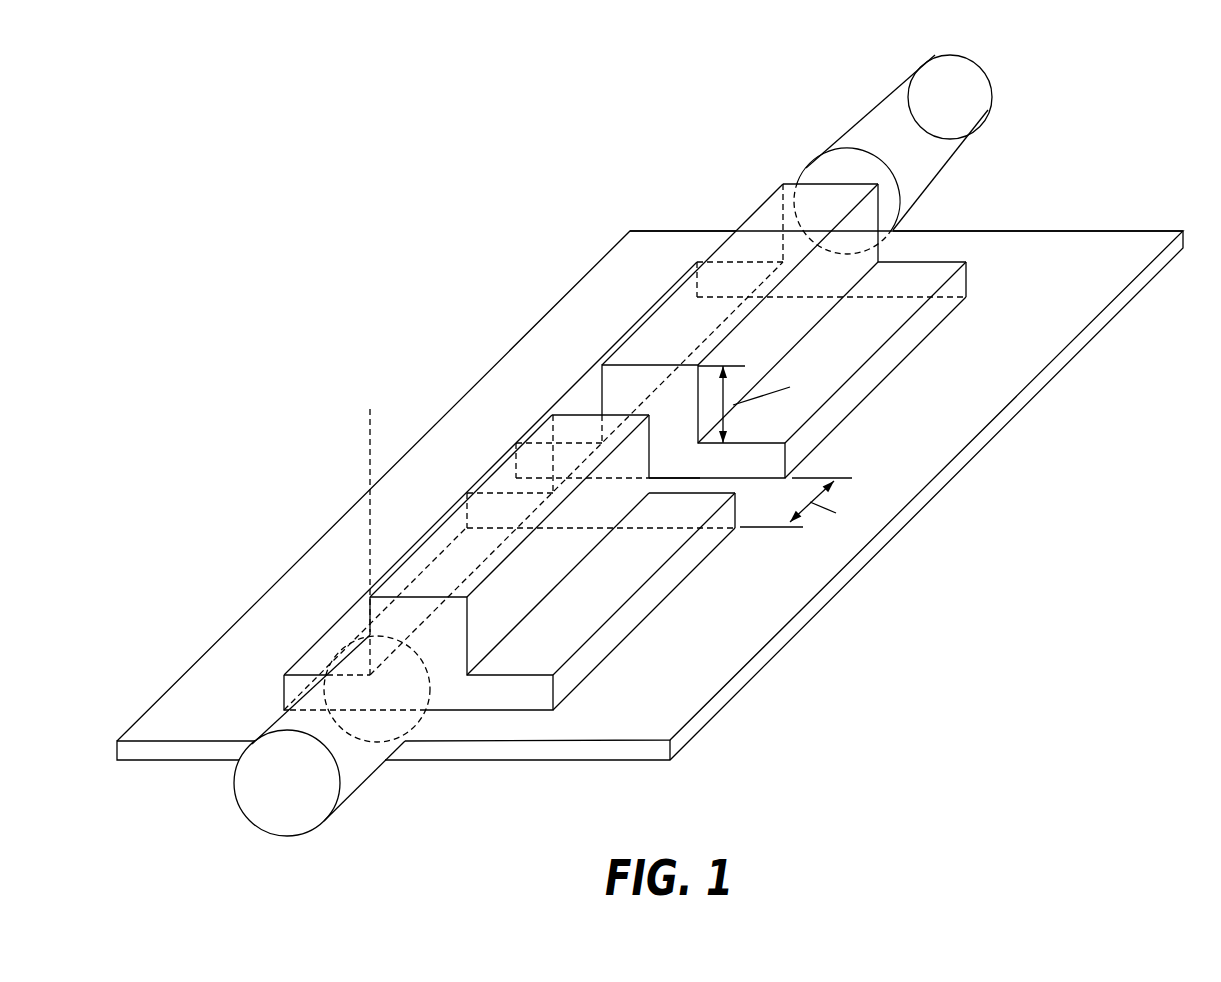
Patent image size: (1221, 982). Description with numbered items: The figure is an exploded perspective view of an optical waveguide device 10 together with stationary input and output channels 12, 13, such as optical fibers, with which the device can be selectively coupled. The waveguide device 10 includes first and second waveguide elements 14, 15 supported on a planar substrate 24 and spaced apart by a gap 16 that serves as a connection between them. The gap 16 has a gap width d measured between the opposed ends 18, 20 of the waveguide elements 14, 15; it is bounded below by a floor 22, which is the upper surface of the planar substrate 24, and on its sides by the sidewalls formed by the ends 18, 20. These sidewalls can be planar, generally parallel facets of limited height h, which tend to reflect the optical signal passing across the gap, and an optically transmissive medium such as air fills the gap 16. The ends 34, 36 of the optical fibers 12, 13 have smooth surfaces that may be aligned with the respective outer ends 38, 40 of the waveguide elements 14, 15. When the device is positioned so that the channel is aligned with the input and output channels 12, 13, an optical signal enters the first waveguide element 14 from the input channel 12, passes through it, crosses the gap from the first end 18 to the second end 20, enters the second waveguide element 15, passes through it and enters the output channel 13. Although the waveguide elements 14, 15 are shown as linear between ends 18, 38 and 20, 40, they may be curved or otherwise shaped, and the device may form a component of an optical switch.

The optical waveguide device 10 is at (417, 234).
The input channel 12 is at (365, 737).
The output channel 13 is at (867, 146).
The first waveguide element 14 is at (430, 563).
The second waveguide element 15 is at (673, 315).
The gap 16 is at (597, 435).
The first end 18 is at (553, 462).
The second end 20 is at (627, 398).
The floor 22 is at (710, 486).
The planar substrate 24 is at (772, 617).
The end of the input optical fiber 34 is at (420, 712).
The end of the output optical fiber 36 is at (815, 175).
The end of the first waveguide element 38 is at (377, 612).
The end of the second waveguide element 40 is at (780, 197).